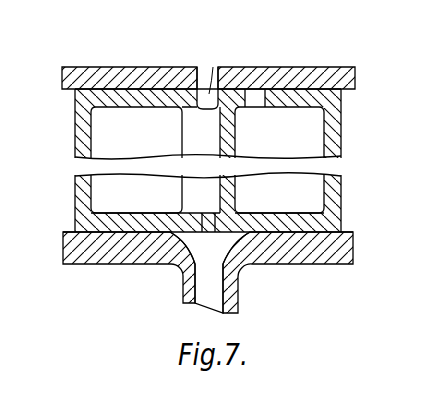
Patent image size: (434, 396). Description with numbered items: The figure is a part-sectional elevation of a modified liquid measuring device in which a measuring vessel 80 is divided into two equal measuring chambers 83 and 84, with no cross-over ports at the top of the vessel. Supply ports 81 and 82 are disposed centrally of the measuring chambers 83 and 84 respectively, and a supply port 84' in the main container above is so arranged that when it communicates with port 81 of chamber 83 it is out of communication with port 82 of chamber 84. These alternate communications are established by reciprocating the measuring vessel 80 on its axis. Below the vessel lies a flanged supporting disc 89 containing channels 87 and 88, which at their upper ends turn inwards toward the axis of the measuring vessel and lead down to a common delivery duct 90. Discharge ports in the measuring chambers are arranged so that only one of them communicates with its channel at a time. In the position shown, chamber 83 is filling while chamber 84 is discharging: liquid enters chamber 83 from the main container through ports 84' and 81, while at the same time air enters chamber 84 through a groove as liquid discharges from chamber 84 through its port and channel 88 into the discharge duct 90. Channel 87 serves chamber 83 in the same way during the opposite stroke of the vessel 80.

The measuring vessel 80 is at (86, 145).
The supply port 81 is at (230, 54).
The supply port 82 is at (258, 96).
The measuring chamber 83 is at (136, 160).
The measuring chamber 84 is at (279, 160).
The supply port 84' is at (193, 72).
The channel 87 is at (158, 236).
The channel 88 is at (250, 236).
The flanged supporting disc 89 is at (80, 257).
The delivery duct 90 is at (209, 288).